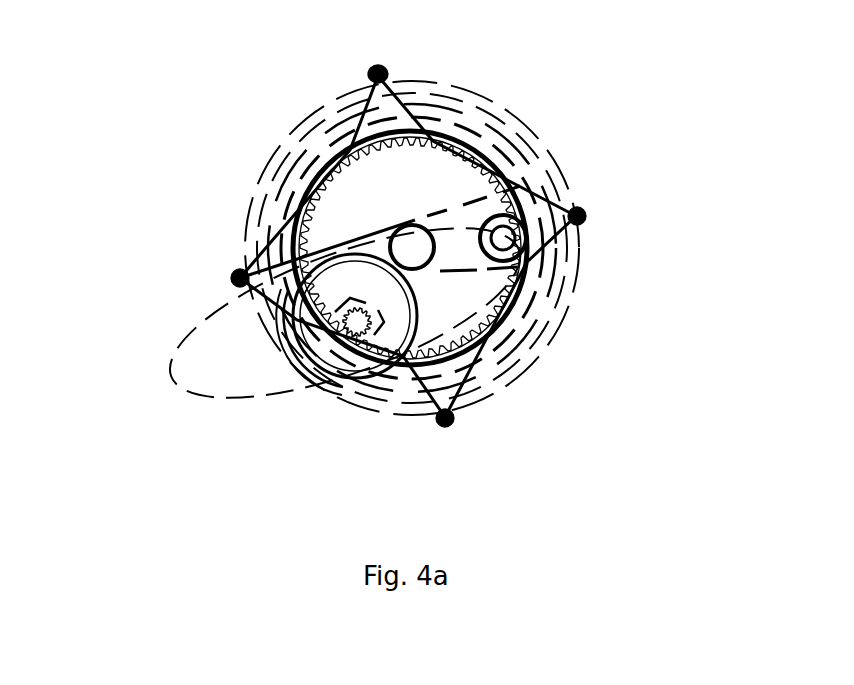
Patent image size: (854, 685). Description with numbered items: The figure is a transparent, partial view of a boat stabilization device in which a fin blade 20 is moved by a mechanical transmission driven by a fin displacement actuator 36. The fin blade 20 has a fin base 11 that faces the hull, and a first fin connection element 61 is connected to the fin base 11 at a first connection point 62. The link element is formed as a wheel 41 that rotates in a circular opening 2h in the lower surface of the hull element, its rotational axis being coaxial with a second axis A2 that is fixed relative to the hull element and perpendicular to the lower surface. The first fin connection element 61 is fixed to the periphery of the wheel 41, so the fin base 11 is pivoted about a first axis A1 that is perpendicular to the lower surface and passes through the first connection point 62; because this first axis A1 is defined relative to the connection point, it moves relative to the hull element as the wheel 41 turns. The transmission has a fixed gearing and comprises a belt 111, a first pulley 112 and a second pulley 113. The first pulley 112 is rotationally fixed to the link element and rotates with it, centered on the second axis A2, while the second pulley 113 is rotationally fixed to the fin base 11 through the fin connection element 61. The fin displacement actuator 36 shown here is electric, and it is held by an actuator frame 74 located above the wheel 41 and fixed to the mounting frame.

The belt 111 is at (448, 204).
The first pulley 112 is at (409, 222).
The second pulley 113 is at (512, 214).
The wheel 41 is at (516, 186).
The circular opening 2h is at (524, 172).
The actuator frame 74 is at (266, 262).
The fin base 11 is at (298, 312).
The fin blade 20 is at (205, 340).
The fin displacement actuator 36 is at (338, 392).
The first axis A1 is at (612, 274).
The first fin connection element 61 is at (612, 274).
The first connection point 62 is at (612, 274).
The second axis A2 is at (482, 218).